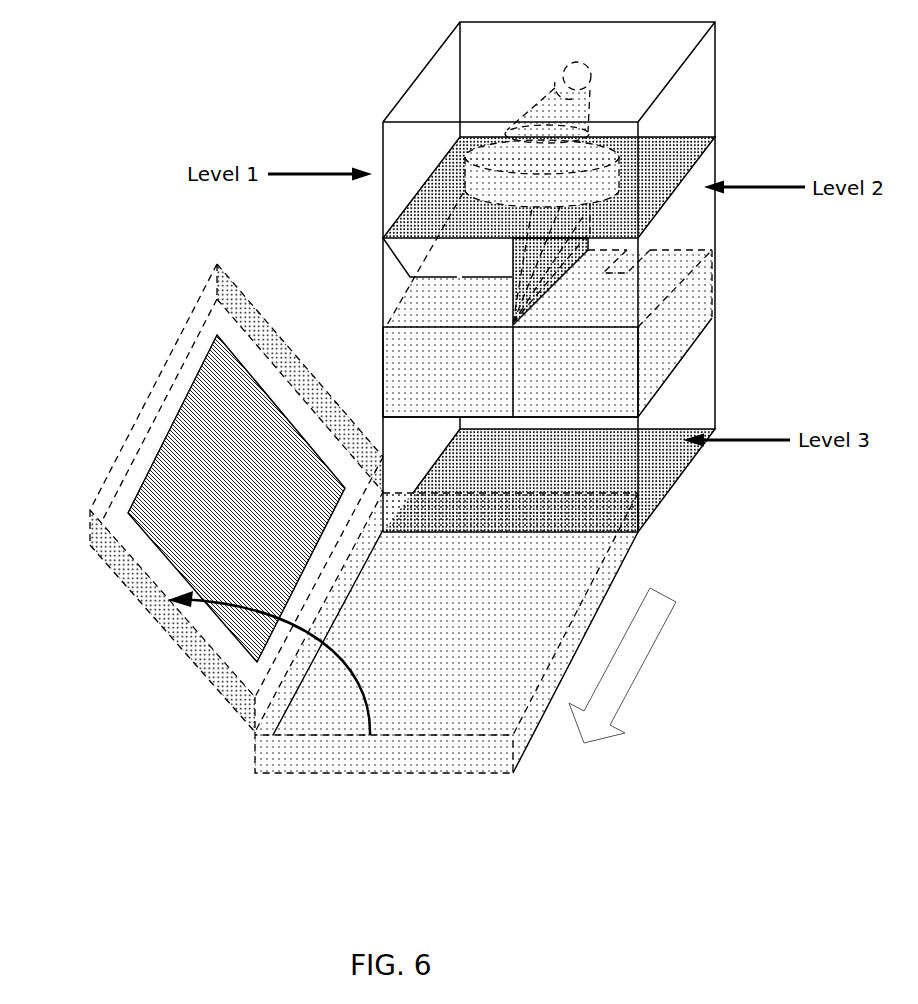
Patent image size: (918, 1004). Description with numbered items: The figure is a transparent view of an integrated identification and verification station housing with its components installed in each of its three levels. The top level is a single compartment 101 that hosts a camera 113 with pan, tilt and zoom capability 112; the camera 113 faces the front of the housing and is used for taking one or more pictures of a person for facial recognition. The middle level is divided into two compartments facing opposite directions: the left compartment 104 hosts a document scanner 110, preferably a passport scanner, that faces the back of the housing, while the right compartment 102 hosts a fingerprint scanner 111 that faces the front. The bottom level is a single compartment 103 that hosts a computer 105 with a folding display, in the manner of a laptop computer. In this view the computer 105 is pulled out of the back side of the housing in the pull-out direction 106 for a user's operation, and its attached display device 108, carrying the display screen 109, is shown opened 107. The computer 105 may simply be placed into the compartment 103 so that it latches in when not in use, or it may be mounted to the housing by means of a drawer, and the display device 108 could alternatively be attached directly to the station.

The top level compartment 101 is at (690, 112).
The right middle level compartment 102 is at (713, 265).
The bottom level compartment 103 is at (695, 403).
The left middle level compartment 104 is at (392, 268).
The computer 105 is at (562, 575).
The pull-out direction 106 is at (648, 658).
The opened display position 107 is at (370, 708).
The display device 108 is at (180, 648).
The display screen 109 is at (160, 485).
The document scanner 110 is at (422, 302).
The fingerprint scanner 111 is at (632, 262).
The pan, tilt and zoom capability 112 is at (465, 158).
The camera 113 is at (557, 83).